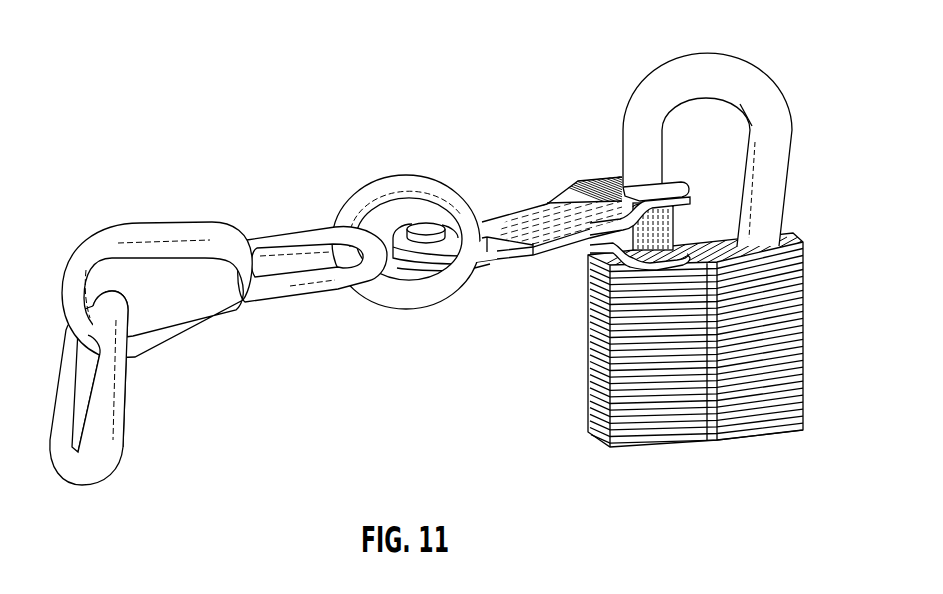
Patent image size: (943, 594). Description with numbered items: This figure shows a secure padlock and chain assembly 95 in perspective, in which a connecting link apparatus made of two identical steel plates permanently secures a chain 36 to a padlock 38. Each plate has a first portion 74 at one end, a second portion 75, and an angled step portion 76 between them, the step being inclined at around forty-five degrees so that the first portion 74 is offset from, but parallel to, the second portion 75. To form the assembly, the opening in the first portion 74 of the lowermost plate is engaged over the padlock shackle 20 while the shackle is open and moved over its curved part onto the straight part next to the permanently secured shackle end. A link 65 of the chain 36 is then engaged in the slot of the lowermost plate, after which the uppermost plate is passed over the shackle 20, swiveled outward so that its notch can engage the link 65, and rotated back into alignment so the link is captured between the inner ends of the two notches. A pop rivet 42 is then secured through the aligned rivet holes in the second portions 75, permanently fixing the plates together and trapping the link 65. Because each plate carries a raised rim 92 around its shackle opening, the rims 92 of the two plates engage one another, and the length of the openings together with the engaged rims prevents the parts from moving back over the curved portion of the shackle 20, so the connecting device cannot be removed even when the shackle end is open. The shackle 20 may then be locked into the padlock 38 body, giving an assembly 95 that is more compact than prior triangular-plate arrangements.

The secure padlock and chain assembly 95 is at (560, 41).
The chain 36 is at (244, 228).
The pop rivet 42 is at (420, 227).
The link 65 is at (460, 197).
The second portion 75 is at (538, 225).
The angled step portion 76 is at (581, 193).
The first portion 74 is at (684, 182).
The raised rim 92 is at (677, 230).
The padlock shackle 20 is at (779, 142).
The padlock 38 is at (786, 305).